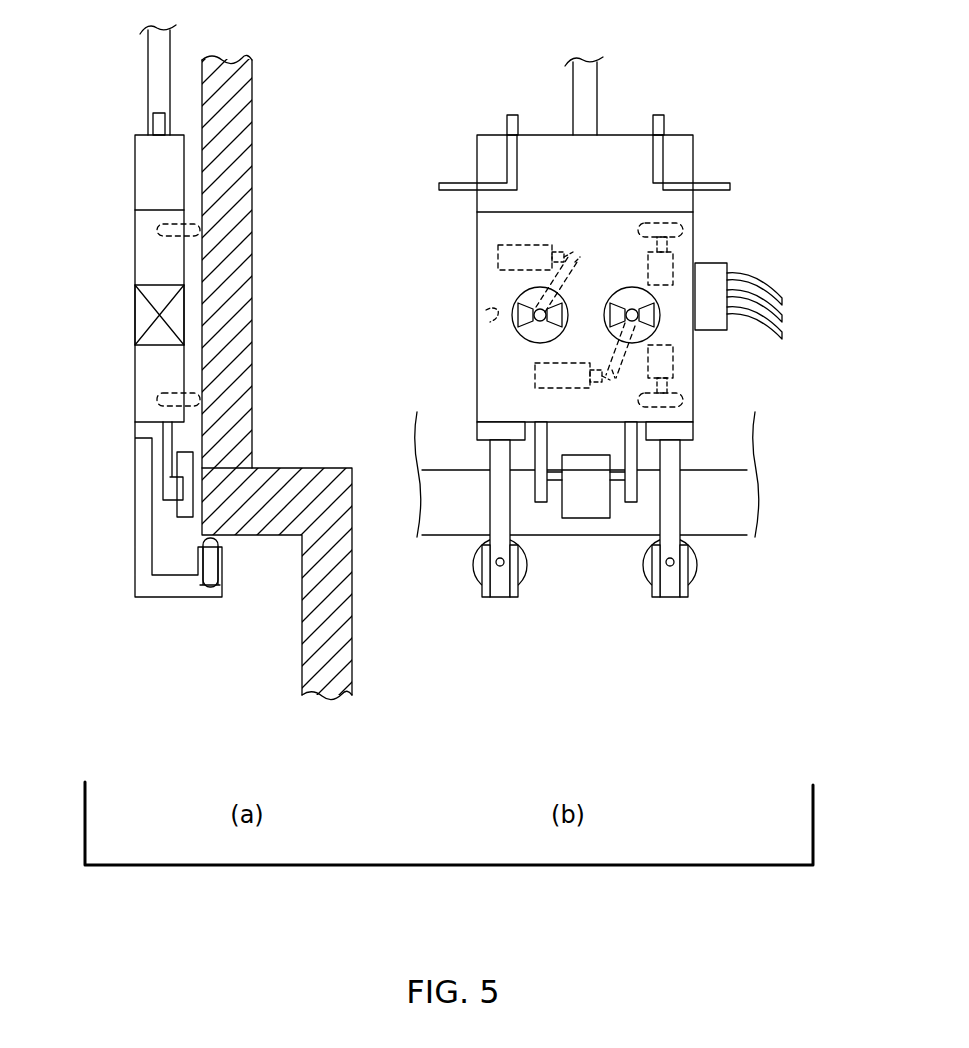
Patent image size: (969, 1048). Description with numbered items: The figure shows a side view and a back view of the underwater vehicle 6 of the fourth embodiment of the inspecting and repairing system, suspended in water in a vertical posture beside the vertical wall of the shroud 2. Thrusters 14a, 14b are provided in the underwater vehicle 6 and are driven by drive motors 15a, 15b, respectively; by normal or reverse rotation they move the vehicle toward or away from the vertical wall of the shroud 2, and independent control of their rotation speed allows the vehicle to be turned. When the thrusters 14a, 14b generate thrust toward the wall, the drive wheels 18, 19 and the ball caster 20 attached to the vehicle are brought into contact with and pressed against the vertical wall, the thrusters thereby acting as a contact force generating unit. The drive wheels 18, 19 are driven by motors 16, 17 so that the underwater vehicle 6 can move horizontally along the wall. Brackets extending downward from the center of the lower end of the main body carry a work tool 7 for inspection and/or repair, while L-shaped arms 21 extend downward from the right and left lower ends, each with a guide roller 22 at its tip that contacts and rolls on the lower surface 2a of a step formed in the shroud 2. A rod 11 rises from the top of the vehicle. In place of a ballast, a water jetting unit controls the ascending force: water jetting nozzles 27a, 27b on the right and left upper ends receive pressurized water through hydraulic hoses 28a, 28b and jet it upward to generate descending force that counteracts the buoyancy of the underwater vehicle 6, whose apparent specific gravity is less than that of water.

The shroud 2 is at (242, 130).
The lower surface of step 2a is at (272, 518).
The underwater vehicle 6 is at (108, 246).
The work tool 7 is at (186, 465).
The support rod 11 is at (170, 45).
The thruster 14a is at (533, 322).
The thruster 14b is at (150, 313).
The drive motor 15a is at (497, 258).
The drive motor 15b is at (534, 378).
The motor 16 is at (673, 262).
The motor 17 is at (673, 355).
The drive wheel 18 is at (200, 230).
The drive wheel 19 is at (200, 399).
The ball caster 20 is at (486, 316).
The L-shaped arm 21 is at (146, 540).
The guide roller 22 is at (210, 562).
The water jetting nozzle 27a is at (505, 117).
The water jetting nozzle 27b is at (151, 120).
The hydraulic hose 28a is at (458, 183).
The hydraulic hose 28b is at (707, 183).